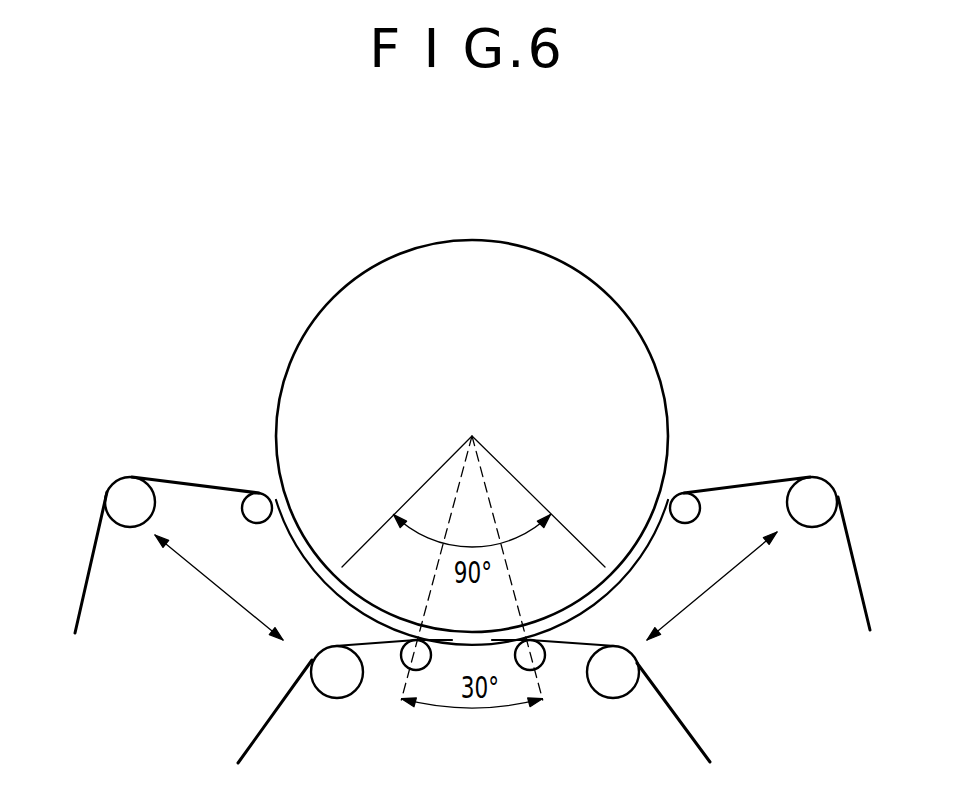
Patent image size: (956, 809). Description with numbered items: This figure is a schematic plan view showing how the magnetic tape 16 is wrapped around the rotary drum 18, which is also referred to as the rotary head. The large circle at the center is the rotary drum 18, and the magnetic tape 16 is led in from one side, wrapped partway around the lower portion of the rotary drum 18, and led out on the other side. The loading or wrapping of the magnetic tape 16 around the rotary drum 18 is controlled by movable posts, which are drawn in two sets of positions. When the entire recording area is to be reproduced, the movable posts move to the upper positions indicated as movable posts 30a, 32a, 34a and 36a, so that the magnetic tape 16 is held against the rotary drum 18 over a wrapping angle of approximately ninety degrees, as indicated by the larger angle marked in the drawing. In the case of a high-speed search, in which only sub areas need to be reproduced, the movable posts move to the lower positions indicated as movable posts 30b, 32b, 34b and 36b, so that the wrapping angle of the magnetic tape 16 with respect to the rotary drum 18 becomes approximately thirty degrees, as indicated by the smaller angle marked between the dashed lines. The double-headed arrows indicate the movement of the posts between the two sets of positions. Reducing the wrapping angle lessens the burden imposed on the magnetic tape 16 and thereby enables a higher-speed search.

The rotary drum 18 is at (585, 312).
The magnetic tape 16 is at (855, 585).
The movable post 30a is at (131, 490).
The movable post 32a is at (258, 505).
The movable post 34a is at (693, 505).
The movable post 36a is at (814, 498).
The movable post 30b is at (330, 680).
The movable post 32b is at (403, 660).
The movable post 34b is at (542, 652).
The movable post 36b is at (617, 677).